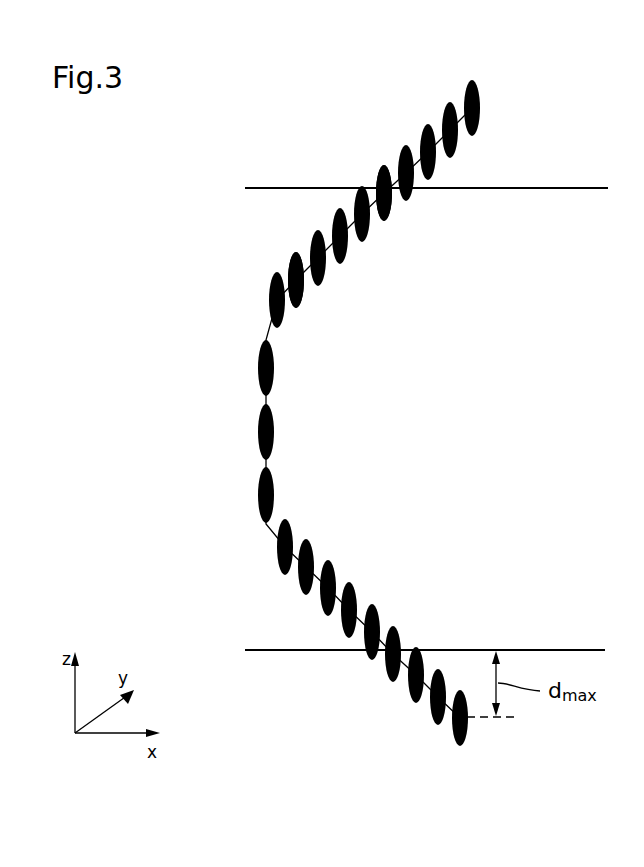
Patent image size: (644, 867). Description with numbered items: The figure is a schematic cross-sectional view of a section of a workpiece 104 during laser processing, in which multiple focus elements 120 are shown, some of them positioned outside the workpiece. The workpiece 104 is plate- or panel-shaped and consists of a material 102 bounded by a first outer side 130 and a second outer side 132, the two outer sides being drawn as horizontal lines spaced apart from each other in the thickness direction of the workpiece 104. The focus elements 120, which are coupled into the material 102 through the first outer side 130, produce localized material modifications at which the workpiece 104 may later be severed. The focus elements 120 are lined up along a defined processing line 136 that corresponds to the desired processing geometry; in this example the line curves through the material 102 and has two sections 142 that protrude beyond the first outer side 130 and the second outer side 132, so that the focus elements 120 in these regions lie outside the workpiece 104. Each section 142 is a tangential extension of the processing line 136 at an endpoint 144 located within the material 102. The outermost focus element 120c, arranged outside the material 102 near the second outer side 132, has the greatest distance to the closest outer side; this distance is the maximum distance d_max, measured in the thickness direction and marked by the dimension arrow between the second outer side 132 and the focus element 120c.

The material 102 is at (509, 212).
The workpiece 104 is at (580, 188).
The focus elements 120 is at (448, 104).
The focus element arranged outside the material 120c is at (469, 735).
The first outer side 130 is at (285, 188).
The second outer side 132 is at (549, 650).
The processing line 136 is at (306, 276).
The section 142 is at (383, 124).
The endpoint 144 is at (394, 190).